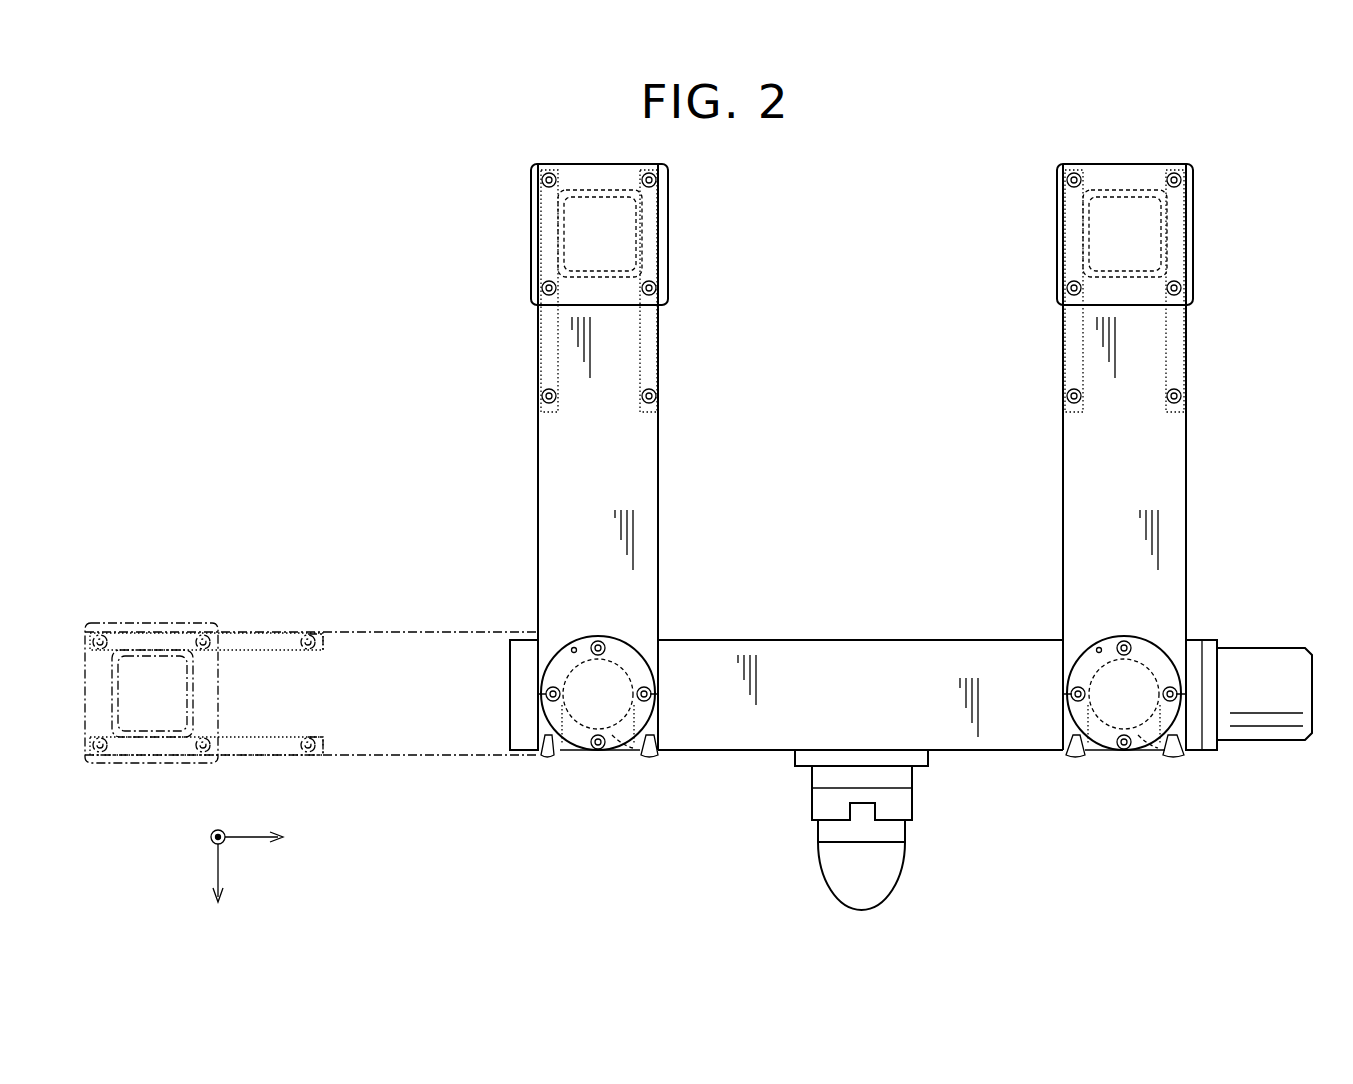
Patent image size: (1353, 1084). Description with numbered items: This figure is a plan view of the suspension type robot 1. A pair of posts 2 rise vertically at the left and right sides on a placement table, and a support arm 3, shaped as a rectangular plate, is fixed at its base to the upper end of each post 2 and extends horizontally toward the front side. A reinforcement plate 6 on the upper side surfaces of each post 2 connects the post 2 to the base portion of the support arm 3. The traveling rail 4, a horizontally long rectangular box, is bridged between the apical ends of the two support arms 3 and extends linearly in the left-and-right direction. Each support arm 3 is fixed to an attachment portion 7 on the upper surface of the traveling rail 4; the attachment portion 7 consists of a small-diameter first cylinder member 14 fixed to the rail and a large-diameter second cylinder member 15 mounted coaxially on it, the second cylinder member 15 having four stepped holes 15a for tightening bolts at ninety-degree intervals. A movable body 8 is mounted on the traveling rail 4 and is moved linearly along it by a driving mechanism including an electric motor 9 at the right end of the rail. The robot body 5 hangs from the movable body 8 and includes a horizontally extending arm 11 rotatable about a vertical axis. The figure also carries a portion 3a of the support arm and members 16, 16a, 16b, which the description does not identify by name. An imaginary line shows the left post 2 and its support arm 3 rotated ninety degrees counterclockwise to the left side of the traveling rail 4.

The suspension type robot 1 is at (1245, 390).
The post 2 is at (595, 190).
The support arm 3 is at (658, 463).
The arm end portion 3a is at (573, 647).
The traveling rail 4 is at (811, 650).
The robot body 5 is at (794, 816).
The reinforcement plate 6 is at (531, 238).
The attachment portion 7 is at (570, 752).
The movable body 8 is at (882, 755).
The electric motor 9 is at (1312, 683).
The arm 11 is at (905, 777).
The first cylinder member 14 is at (613, 748).
The second cylinder member 15 is at (633, 653).
The stepped hole 15a is at (603, 642).
The bracket 16 is at (536, 726).
The bracket tab 16a is at (633, 758).
The bracket tab 16b is at (547, 758).